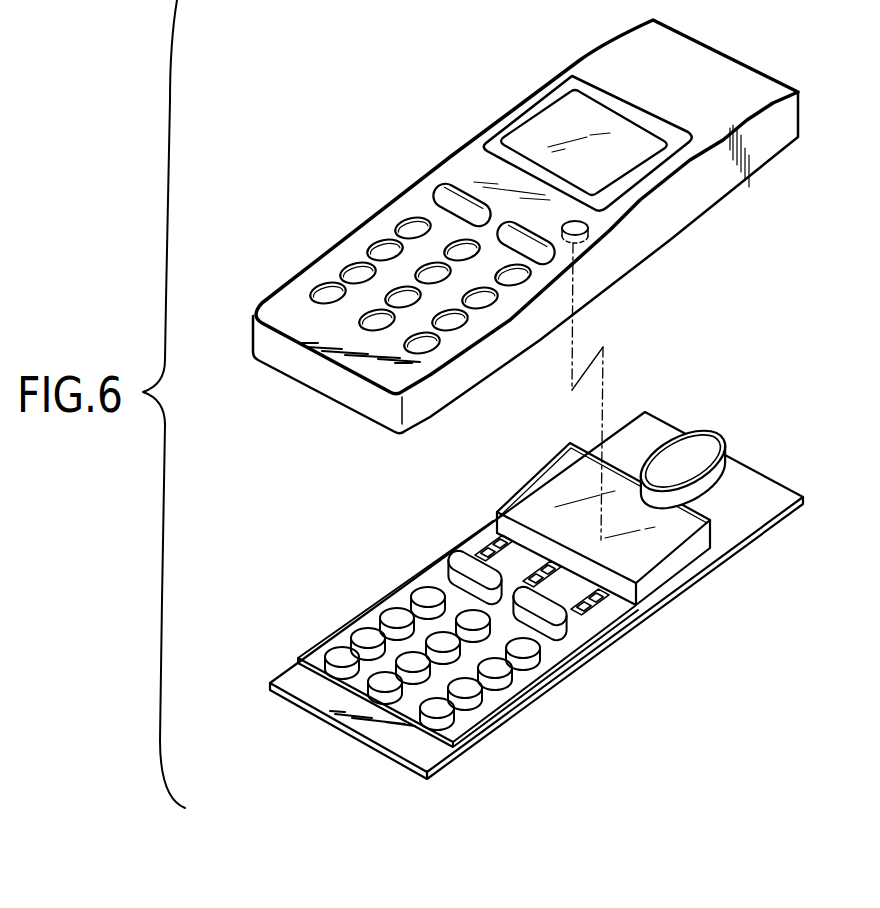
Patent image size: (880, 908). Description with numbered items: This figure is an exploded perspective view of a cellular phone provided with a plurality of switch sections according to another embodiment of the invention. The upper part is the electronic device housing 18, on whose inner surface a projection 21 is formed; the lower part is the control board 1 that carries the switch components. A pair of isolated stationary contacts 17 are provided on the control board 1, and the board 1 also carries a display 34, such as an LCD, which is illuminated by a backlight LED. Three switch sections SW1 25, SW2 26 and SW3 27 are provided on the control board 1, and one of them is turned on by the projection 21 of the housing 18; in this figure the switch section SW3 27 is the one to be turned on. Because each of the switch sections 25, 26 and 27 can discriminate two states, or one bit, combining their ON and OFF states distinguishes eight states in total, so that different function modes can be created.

The control board 1 is at (747, 462).
The stationary contacts 17 is at (606, 607).
The electronic device housing 18 is at (527, 97).
The projection 21 is at (588, 230).
The switch section SW1 25 is at (480, 572).
The switch section SW2 26 is at (530, 600).
The switch section SW3 27 is at (577, 610).
The display 34 is at (657, 535).